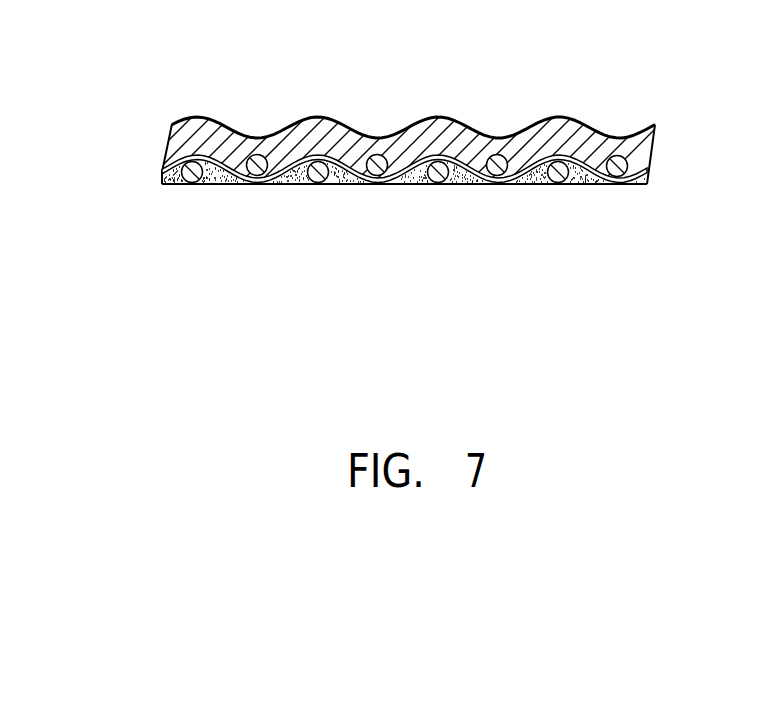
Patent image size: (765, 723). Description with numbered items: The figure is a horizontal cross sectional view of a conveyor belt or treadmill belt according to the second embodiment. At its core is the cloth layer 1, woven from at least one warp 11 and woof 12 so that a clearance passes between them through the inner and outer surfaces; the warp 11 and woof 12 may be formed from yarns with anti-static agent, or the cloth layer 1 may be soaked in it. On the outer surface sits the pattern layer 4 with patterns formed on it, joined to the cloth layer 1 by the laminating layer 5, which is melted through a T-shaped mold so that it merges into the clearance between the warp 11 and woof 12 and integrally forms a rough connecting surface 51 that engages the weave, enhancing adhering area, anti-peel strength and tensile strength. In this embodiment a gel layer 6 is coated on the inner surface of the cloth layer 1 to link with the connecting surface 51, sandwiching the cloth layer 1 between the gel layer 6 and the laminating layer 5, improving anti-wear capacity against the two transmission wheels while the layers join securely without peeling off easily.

The cloth layer 1 is at (160, 164).
The pattern layer 4 is at (442, 118).
The laminating layer 5 is at (243, 148).
The connecting surface 51 is at (355, 168).
The warp 11 is at (317, 185).
The woof 12 is at (417, 185).
The gel layer 6 is at (465, 185).